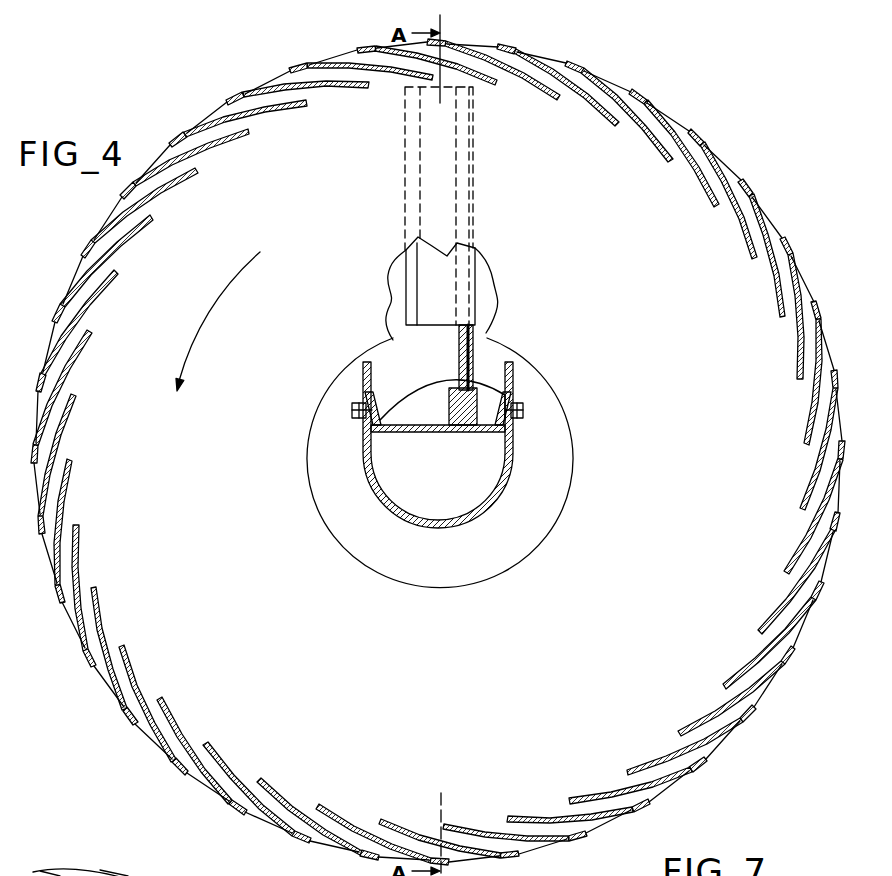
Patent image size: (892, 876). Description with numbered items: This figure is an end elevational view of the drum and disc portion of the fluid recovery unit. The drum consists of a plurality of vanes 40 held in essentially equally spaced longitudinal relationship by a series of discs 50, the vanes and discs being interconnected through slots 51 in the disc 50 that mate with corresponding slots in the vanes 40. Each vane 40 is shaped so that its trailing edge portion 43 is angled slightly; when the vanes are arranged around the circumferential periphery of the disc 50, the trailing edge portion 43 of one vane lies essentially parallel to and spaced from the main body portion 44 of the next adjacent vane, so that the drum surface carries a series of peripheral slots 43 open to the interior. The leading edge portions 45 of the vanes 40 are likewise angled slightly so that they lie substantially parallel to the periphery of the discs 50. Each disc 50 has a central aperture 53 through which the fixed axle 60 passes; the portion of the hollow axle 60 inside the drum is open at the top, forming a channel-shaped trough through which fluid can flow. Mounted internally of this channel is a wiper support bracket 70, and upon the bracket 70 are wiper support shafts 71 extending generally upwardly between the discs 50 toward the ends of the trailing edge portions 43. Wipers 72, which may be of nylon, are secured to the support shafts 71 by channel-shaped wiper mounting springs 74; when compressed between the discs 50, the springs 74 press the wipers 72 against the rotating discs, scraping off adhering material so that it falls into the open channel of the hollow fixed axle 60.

The vane 40 is at (98, 662).
The trailing edge portion 43 is at (281, 786).
The main body portion 44 is at (160, 782).
The leading edge portion 45 is at (254, 829).
The disc 50 is at (508, 660).
The slot 51 is at (140, 875).
The central aperture 53 is at (563, 511).
The fixed axle 60 is at (476, 519).
The wiper support bracket 70 is at (414, 433).
The wiper support shaft 71 is at (467, 352).
The wiper 72 is at (407, 298).
The wiper mounting spring 74 is at (446, 297).